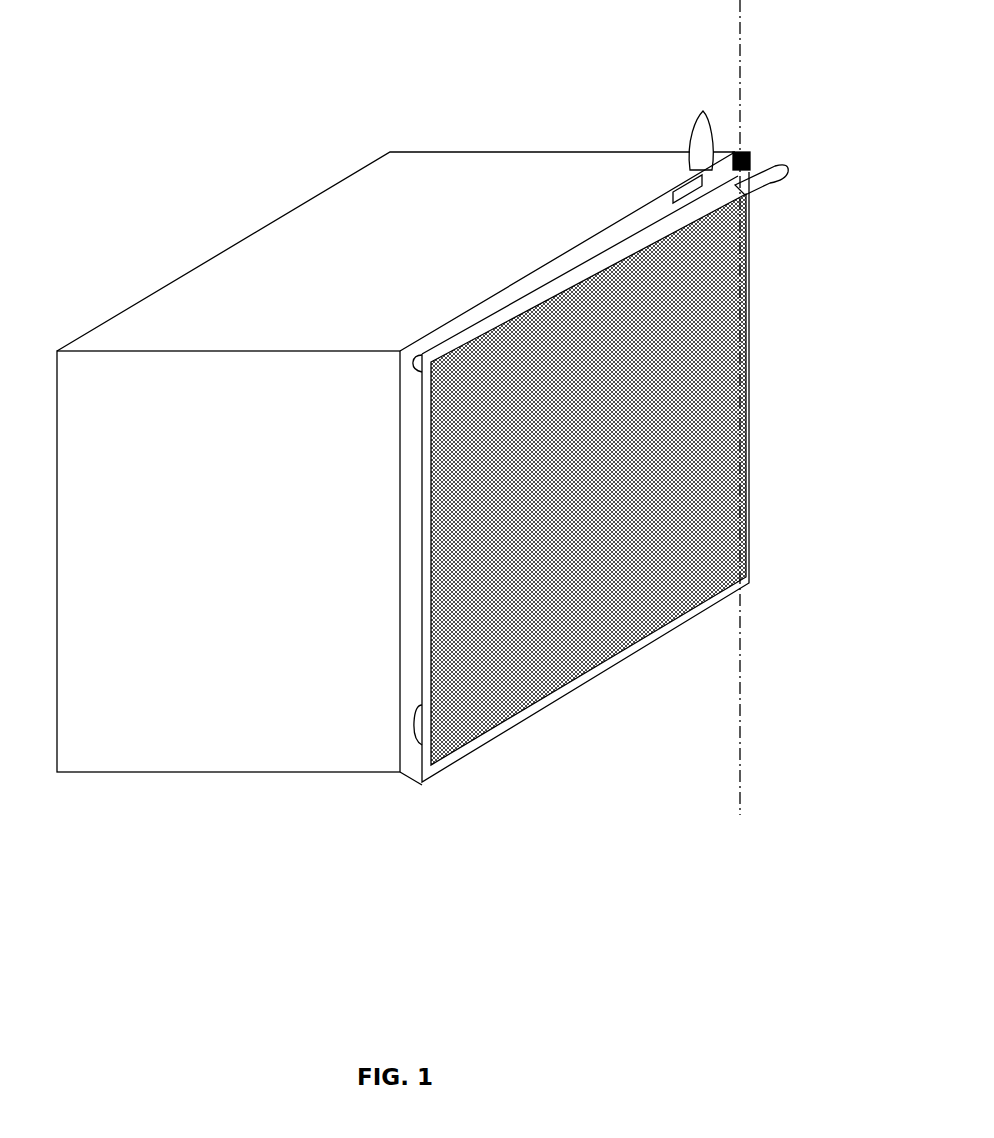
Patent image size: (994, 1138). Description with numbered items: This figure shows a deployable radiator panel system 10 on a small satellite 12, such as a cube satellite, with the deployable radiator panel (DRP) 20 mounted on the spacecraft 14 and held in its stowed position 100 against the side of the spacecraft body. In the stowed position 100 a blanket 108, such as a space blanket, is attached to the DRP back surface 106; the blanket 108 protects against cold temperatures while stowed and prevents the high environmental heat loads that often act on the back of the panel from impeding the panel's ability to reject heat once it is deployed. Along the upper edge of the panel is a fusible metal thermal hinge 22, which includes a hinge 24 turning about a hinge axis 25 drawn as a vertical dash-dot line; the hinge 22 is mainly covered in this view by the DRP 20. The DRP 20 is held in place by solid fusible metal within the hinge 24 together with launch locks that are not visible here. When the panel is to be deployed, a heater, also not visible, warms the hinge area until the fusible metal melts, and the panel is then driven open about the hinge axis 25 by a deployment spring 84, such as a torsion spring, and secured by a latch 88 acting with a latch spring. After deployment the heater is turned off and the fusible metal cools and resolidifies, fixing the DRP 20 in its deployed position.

The deployable radiator panel system 10 is at (396, 393).
The small satellite 12 is at (396, 468).
The spacecraft 14 is at (205, 590).
The deployable radiator panel 20 is at (616, 477).
The fusible metal thermal hinge 22 is at (616, 477).
The hinge 24 is at (745, 162).
The hinge axis 25 is at (738, 22).
The deployment spring 84 is at (768, 142).
The latch 88 is at (700, 125).
The stowed position 100 is at (400, 816).
The DRP back surface 106 is at (654, 676).
The blanket 108 is at (664, 428).